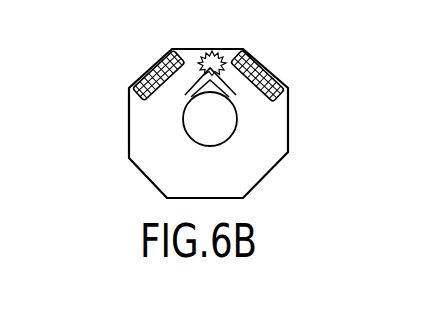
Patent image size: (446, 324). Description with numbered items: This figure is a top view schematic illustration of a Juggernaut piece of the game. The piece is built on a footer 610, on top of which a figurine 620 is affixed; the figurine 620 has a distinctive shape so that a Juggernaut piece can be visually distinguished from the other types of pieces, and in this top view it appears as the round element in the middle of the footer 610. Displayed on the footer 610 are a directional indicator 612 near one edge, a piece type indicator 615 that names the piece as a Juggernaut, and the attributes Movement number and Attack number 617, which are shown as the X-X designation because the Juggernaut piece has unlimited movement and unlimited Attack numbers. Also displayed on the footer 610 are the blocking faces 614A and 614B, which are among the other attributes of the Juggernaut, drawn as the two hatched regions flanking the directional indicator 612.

The footer 610 is at (129, 121).
The directional indicator 612 is at (213, 66).
The blocking face 614A is at (162, 66).
The blocking face 614B is at (262, 71).
The piece type indicator 615 is at (272, 158).
The Movement number and Attack number attributes 617 is at (223, 182).
The figurine 620 is at (203, 123).